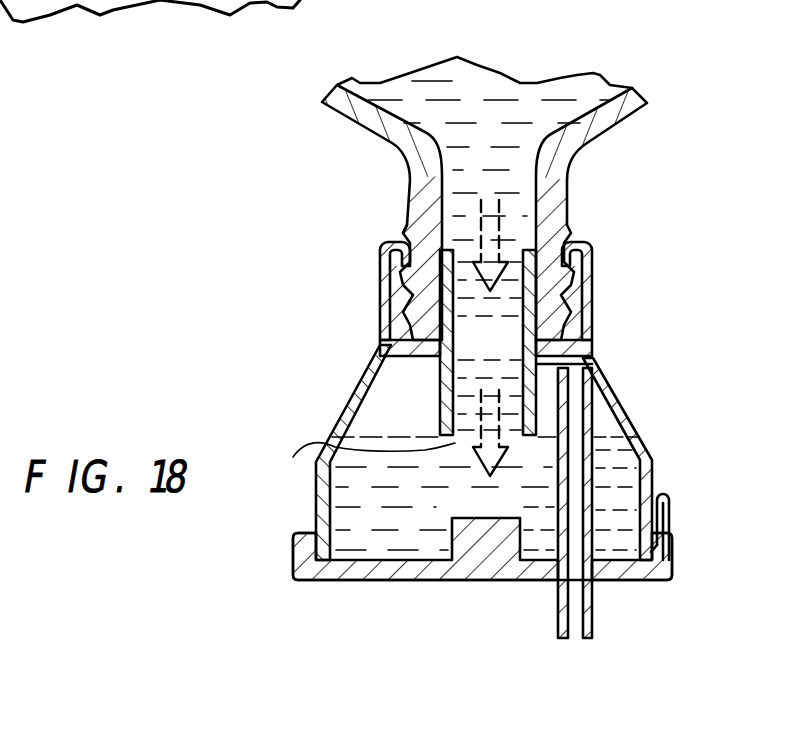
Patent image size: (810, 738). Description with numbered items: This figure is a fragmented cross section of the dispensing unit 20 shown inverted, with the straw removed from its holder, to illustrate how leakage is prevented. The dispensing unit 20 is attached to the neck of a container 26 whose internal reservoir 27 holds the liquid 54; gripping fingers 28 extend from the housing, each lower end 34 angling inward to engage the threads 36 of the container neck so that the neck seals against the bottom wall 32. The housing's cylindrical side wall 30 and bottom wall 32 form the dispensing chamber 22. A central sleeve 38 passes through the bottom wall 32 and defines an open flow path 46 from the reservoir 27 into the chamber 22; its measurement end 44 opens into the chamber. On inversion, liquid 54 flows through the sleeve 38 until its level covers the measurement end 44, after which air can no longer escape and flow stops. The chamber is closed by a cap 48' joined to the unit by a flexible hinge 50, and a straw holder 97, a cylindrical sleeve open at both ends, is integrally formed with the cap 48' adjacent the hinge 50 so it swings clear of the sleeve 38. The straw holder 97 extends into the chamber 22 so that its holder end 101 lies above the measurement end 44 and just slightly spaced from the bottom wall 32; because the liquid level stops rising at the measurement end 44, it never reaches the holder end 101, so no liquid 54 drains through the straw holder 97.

The dispensing unit 20 is at (297, 521).
The dispensing chamber 22 is at (362, 418).
The container 26 is at (622, 108).
The internal reservoir 27 is at (488, 90).
The gripping fingers 28 is at (590, 258).
The cylindrical side wall 30 is at (655, 462).
The bottom wall 32 is at (386, 368).
The lower end 34 is at (392, 264).
The threads 36 is at (395, 238).
The central sleeve 38 is at (440, 392).
The measurement end 44 is at (444, 455).
The open flow path 46 is at (493, 338).
The cap 48' is at (482, 573).
The flexible hinge 50 is at (669, 497).
The liquid 54 is at (486, 500).
The straw holder 97 is at (597, 410).
The holder end 101 is at (596, 378).